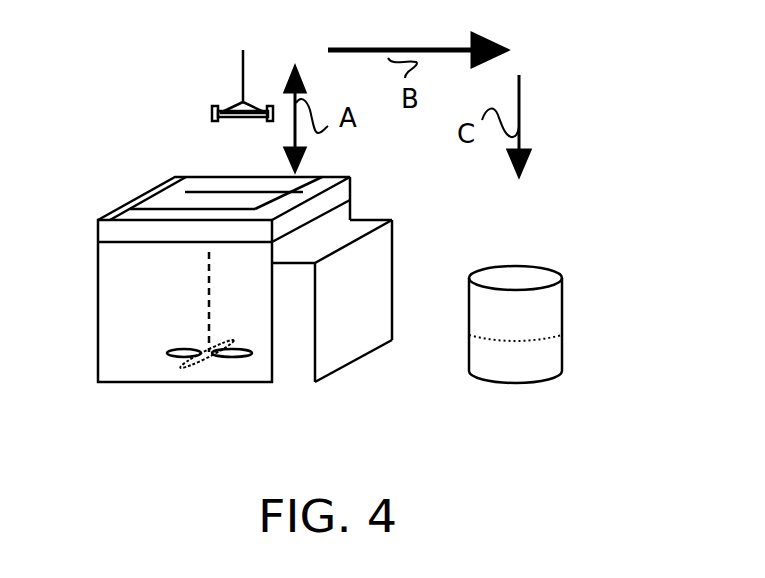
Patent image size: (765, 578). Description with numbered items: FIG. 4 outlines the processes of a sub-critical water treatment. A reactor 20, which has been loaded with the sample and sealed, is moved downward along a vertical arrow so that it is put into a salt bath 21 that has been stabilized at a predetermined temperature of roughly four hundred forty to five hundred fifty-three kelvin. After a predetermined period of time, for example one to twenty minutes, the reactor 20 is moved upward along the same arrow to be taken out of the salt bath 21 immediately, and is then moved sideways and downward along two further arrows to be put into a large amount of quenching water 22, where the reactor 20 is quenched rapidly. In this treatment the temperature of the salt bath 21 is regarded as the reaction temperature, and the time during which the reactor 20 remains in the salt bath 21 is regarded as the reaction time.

The reactor 20 is at (213, 114).
The salt bath 21 is at (148, 370).
The quenching water 22 is at (478, 365).